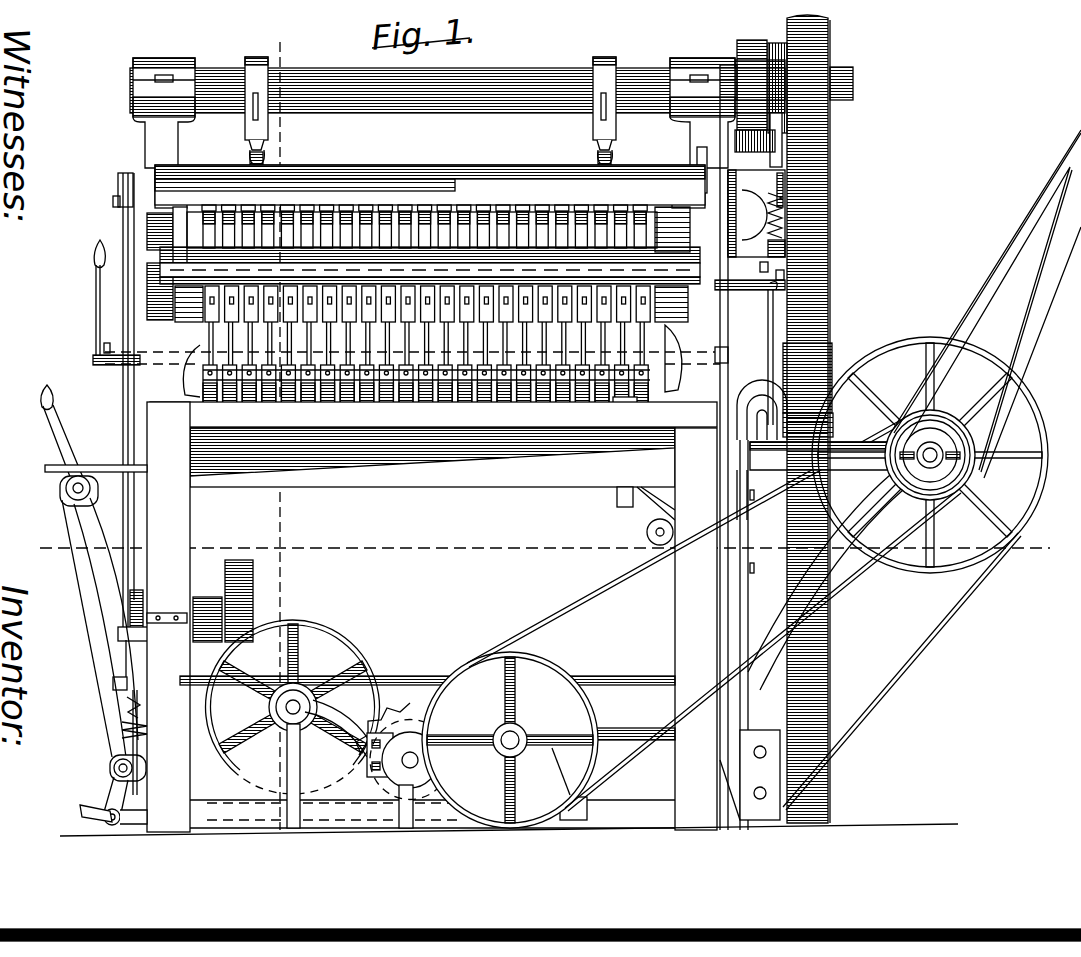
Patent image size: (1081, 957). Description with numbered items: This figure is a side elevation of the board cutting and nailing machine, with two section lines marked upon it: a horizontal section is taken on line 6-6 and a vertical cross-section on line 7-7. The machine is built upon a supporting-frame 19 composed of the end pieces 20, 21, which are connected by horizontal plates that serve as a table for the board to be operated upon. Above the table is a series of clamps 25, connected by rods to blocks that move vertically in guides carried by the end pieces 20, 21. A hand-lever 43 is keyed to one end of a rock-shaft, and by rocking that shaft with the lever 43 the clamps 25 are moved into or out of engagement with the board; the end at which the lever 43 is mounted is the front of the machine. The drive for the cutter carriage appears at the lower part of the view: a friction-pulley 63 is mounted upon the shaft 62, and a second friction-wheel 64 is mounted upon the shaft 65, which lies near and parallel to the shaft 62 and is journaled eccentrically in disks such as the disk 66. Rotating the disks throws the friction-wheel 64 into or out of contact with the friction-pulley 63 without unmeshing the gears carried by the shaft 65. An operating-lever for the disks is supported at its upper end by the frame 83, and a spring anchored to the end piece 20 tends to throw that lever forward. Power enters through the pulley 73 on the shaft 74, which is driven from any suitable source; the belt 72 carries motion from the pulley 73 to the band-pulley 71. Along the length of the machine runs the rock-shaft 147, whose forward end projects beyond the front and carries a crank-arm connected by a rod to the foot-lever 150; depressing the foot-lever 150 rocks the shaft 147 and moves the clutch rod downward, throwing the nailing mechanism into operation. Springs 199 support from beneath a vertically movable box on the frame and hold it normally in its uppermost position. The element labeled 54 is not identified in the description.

The section line 6- 6 is at (543, 549).
The section line 7- 7 is at (279, 439).
The supporting-frame 19 is at (432, 477).
The end piece 20 is at (168, 617).
The end piece 21 is at (696, 629).
The clamps 25 is at (502, 393).
The hand-lever 43 is at (95, 312).
The collar 54 is at (125, 365).
The shaft 62 is at (297, 703).
The friction-pulley 63 is at (348, 683).
The friction-wheel 64 is at (380, 712).
The shaft 65 is at (400, 770).
The disk 66 is at (432, 755).
The band-pulley 71 is at (593, 712).
The belt 72 is at (614, 572).
The pulley 73 is at (886, 483).
The shaft 74 is at (932, 452).
The frame 83 is at (48, 470).
The rock-shaft 147 is at (405, 680).
The foot-lever 150 is at (98, 806).
The springs 199 is at (122, 724).